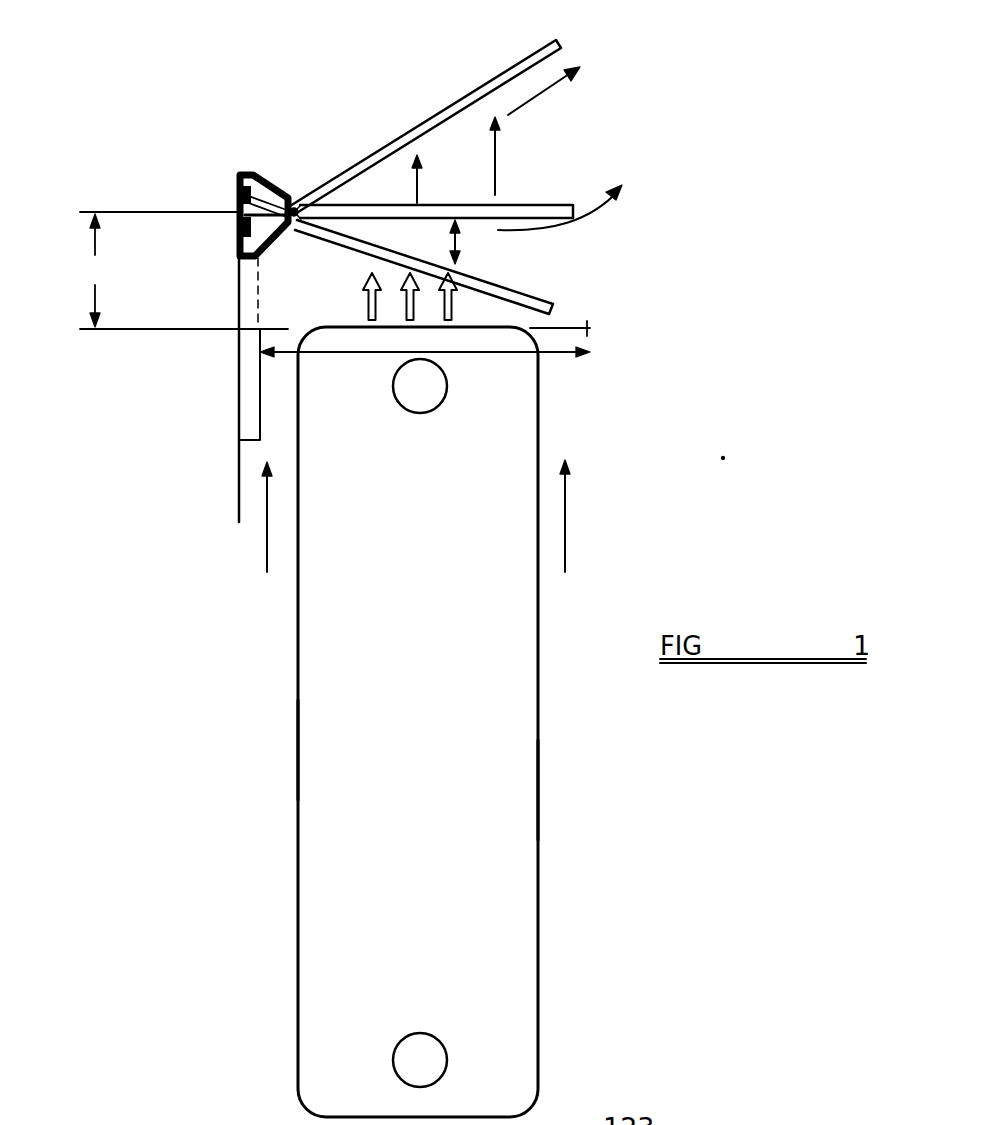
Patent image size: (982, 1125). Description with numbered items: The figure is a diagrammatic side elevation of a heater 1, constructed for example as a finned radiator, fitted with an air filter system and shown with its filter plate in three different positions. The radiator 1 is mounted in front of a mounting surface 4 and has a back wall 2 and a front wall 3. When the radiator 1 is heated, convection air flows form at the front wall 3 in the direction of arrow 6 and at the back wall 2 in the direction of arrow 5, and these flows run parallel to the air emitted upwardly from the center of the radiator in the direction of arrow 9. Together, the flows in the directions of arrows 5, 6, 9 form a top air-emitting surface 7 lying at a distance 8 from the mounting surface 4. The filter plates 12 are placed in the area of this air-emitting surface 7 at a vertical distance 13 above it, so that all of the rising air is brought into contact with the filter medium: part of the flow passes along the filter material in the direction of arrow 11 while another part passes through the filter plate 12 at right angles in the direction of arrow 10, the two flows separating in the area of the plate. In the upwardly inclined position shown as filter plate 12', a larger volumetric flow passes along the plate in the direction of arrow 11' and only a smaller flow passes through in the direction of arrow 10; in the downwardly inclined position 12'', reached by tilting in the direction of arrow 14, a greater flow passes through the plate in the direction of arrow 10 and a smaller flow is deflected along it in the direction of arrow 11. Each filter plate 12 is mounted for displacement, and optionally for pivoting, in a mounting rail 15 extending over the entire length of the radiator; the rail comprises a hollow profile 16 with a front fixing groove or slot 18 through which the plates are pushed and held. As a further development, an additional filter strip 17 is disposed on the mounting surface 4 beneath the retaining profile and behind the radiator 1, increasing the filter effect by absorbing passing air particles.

The heater 1 is at (537, 655).
The back wall 2 is at (298, 752).
The front wall 3 is at (540, 800).
The mounting surface 4 is at (238, 315).
The arrow 5 is at (267, 528).
The arrow 6 is at (568, 523).
The top air-emitting surface 7 is at (580, 325).
The distance 8 is at (432, 348).
The arrow 9 is at (365, 305).
The arrow 10 is at (495, 172).
The arrow 11 is at (574, 220).
The arrow 11' is at (574, 97).
The filter plate 12 is at (476, 171).
The filter plate 12' is at (481, 108).
The filter plate 12'' is at (458, 267).
The vertical distance 13 is at (102, 277).
The arrow 14 is at (458, 243).
The mounting rail 15 is at (237, 189).
The hollow profile 16 is at (276, 192).
The filter strip 17 is at (242, 385).
The fixing groove or slot 18 is at (300, 212).